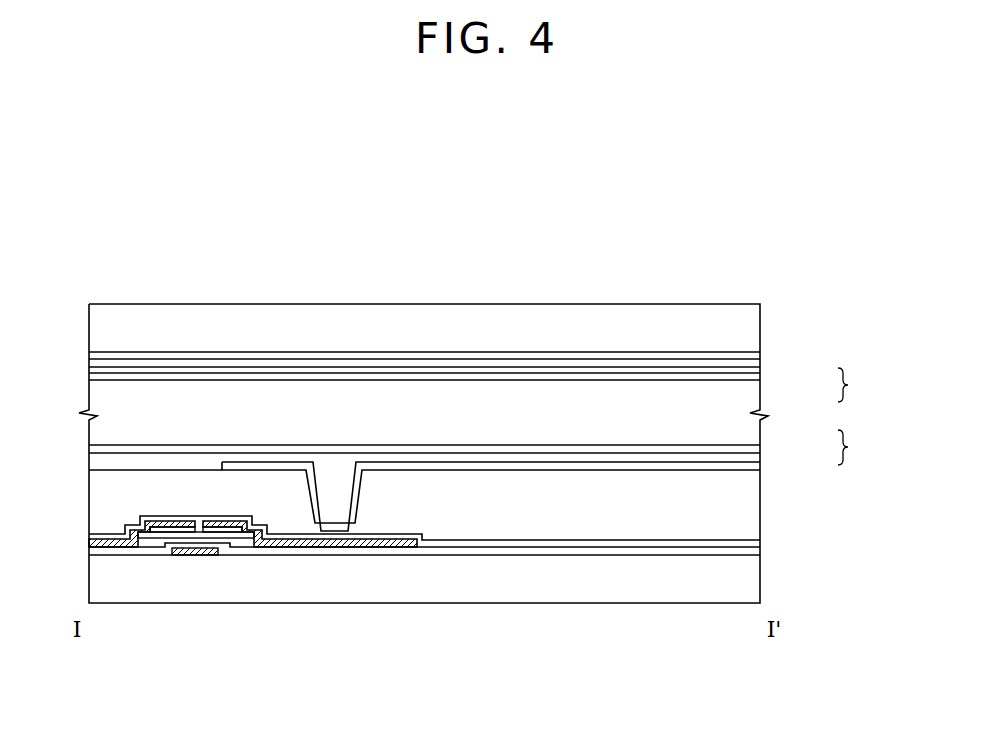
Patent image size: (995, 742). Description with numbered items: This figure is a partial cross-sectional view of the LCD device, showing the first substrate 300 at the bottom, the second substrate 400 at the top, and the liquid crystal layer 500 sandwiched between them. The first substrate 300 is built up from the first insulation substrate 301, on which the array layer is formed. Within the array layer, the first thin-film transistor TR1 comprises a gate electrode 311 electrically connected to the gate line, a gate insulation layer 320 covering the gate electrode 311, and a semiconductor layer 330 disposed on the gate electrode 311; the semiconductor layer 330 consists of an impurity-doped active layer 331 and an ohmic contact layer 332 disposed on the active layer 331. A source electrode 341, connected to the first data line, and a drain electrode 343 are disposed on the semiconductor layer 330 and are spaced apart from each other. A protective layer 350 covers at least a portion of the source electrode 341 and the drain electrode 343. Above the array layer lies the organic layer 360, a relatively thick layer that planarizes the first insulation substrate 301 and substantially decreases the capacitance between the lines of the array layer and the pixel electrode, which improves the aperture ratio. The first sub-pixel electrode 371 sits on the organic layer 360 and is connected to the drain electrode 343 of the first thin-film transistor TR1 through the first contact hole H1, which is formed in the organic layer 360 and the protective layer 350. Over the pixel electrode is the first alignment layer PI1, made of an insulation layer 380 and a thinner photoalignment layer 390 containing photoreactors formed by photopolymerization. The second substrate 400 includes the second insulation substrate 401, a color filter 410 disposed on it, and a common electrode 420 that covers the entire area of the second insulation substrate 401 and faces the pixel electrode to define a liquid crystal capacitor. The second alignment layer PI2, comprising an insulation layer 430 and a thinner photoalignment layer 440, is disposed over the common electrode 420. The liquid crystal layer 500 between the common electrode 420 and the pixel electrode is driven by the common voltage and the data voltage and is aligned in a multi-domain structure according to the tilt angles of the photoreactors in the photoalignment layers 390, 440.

The first substrate 300 is at (72, 447).
The first insulation substrate 301 is at (758, 580).
The gate electrode 311 is at (191, 621).
The gate insulation layer 320 is at (760, 551).
The semiconductor layer 330 is at (214, 611).
The active layer 331 is at (232, 540).
The ohmic contact layer 332 is at (247, 533).
The source electrode 341 is at (105, 548).
The drain electrode 343 is at (335, 548).
The protective layer 350 is at (760, 543).
The organic layer 360 is at (758, 507).
The first sub-pixel electrode 371 is at (758, 468).
The insulation layer 380 is at (760, 456).
The photoalignment layer 390 is at (760, 449).
The second substrate 400 is at (72, 305).
The second insulation substrate 401 is at (758, 311).
The color filter 410 is at (760, 354).
The common electrode 420 is at (760, 362).
The insulation layer 430 is at (760, 369).
The photoalignment layer 440 is at (760, 378).
The liquid crystal layer 500 is at (72, 385).
The first contact hole H1 is at (338, 498).
The first thin-film transistor TR1 is at (252, 621).
The first alignment layer PI1 is at (860, 447).
The second alignment layer PI2 is at (860, 385).